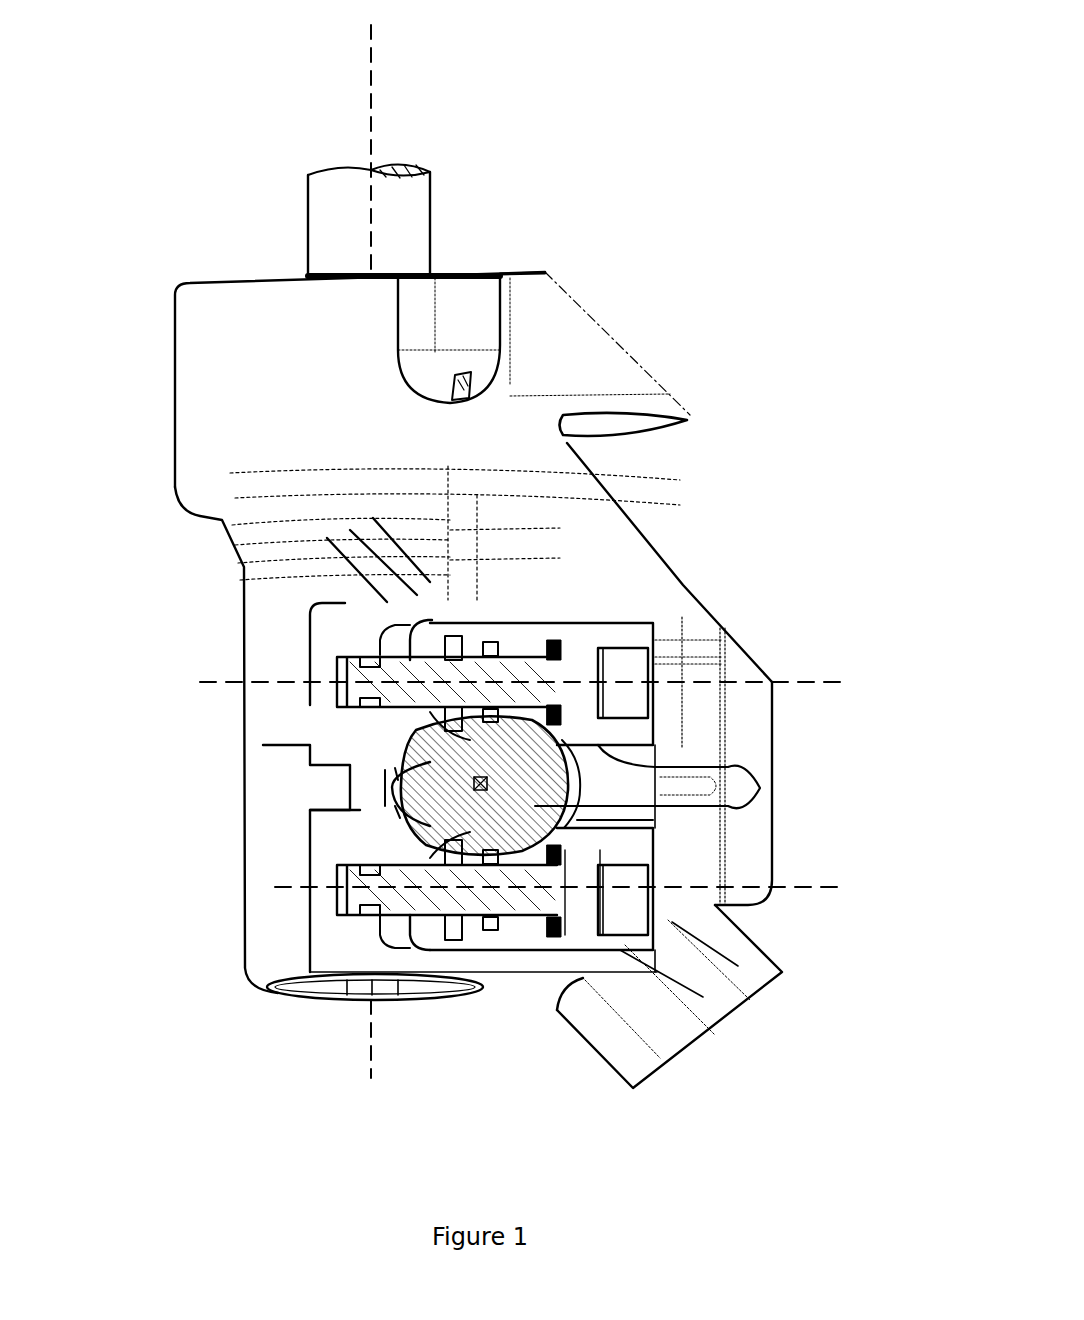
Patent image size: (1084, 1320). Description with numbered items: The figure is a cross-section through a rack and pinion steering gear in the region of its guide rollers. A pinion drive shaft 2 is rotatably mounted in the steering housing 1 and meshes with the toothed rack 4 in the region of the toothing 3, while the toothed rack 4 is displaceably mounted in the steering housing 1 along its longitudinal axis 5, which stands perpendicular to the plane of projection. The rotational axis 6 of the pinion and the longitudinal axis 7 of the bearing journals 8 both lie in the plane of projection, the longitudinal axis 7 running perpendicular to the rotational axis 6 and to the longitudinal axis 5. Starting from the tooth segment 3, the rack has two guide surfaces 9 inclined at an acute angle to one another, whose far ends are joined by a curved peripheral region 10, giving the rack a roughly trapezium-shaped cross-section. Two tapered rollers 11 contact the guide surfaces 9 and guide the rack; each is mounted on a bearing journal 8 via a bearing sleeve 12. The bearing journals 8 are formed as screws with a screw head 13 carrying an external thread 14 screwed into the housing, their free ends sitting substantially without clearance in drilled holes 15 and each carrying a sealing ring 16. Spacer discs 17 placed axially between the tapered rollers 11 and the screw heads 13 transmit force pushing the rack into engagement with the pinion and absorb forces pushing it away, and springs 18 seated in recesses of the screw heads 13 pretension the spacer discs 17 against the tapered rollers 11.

The steering housing 1 is at (577, 337).
The pinion drive shaft 2 is at (403, 228).
The toothing 3 is at (422, 808).
The toothed rack 4 is at (535, 808).
The longitudinal axis 5 is at (487, 782).
The rotational axis 6 is at (368, 110).
The longitudinal axis 7 is at (817, 682).
The bearing journal 8 is at (385, 648).
The guide surface 9 is at (470, 727).
The curved peripheral region 10 is at (552, 763).
The tapered roller 11 is at (556, 642).
The bearing sleeve 12 is at (500, 653).
The screw head 13 is at (650, 620).
The thread 14 is at (615, 633).
The drilled hole 15 is at (375, 690).
The sealing ring 16 is at (340, 662).
The spacer disc 17 is at (590, 623).
The spring 18 is at (565, 852).